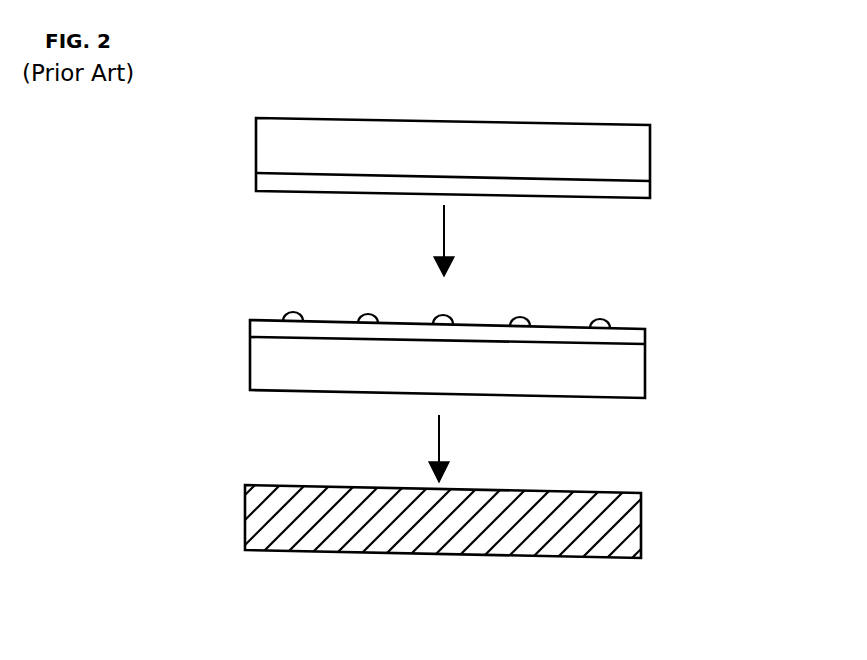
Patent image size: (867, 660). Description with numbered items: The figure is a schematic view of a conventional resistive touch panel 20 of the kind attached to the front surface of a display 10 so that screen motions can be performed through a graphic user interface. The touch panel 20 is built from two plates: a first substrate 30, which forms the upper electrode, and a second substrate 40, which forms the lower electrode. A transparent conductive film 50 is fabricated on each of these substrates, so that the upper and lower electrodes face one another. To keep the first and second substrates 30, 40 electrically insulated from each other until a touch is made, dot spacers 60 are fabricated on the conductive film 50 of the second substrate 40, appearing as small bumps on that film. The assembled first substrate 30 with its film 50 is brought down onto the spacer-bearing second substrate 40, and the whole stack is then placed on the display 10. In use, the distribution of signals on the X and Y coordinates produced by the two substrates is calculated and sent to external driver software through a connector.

The display 10 is at (640, 525).
The resistive touch panel 20 is at (490, 176).
The first substrate 30 is at (650, 152).
The second substrate 40 is at (643, 377).
The transparent conductive film 50 is at (648, 192).
The dot spacers 60 is at (605, 325).